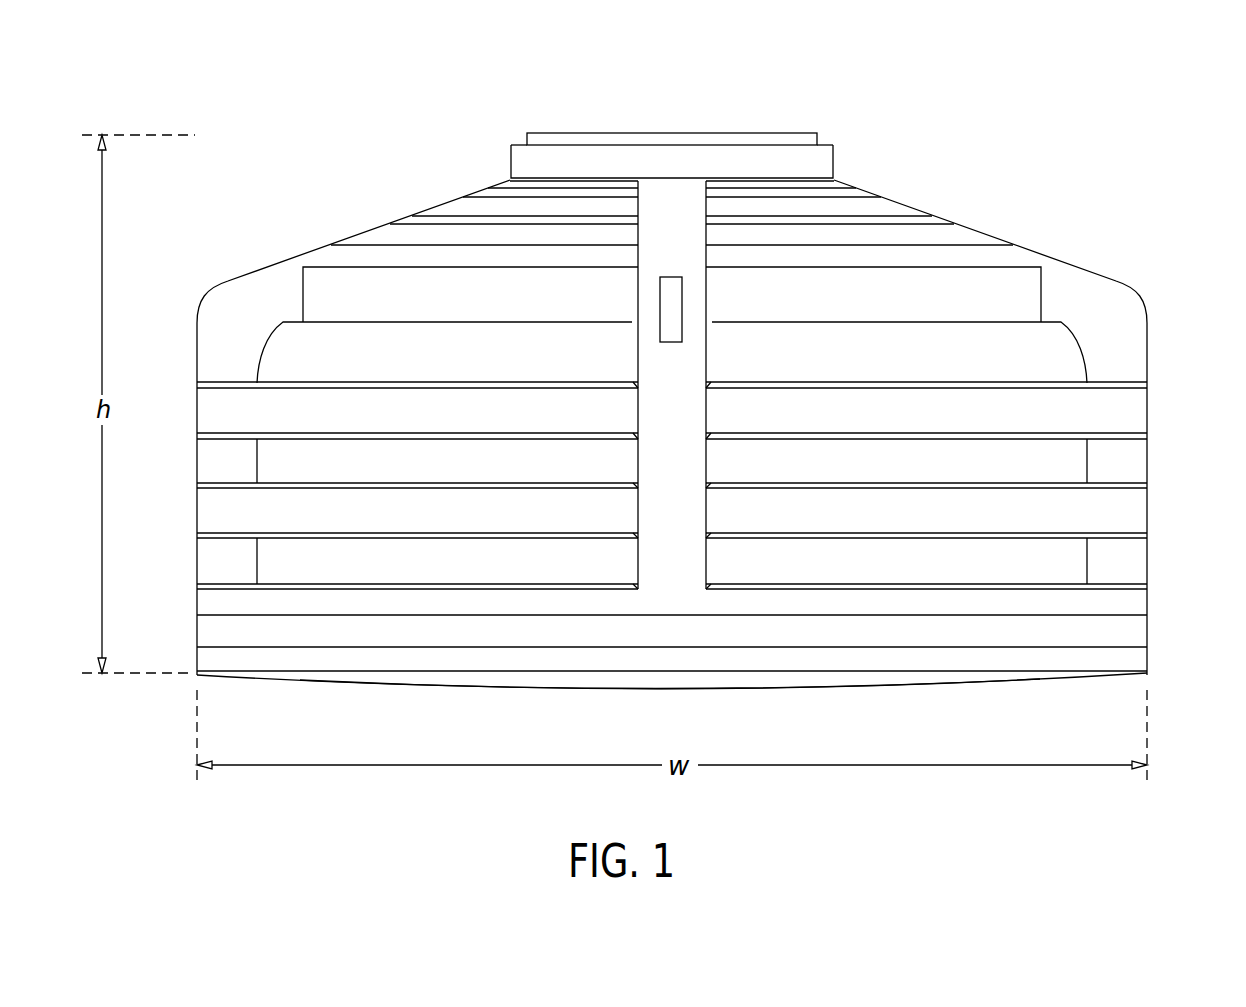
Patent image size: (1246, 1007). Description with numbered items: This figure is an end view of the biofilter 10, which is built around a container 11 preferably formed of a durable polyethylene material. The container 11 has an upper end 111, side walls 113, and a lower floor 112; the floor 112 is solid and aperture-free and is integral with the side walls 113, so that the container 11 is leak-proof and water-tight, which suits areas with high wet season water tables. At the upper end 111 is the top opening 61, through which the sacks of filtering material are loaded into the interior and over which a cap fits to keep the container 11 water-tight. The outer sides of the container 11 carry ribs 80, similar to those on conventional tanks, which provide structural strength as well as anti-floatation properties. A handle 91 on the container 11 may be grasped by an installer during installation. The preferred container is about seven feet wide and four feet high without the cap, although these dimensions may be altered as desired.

The biofilter 10 is at (1000, 144).
The container 11 is at (1072, 260).
The upper end 111 is at (368, 196).
The lower floor 112 is at (967, 678).
The side walls 113 is at (197, 342).
The ribs 80 is at (1140, 407).
The handle 91 is at (672, 277).
The top opening 61 is at (790, 132).